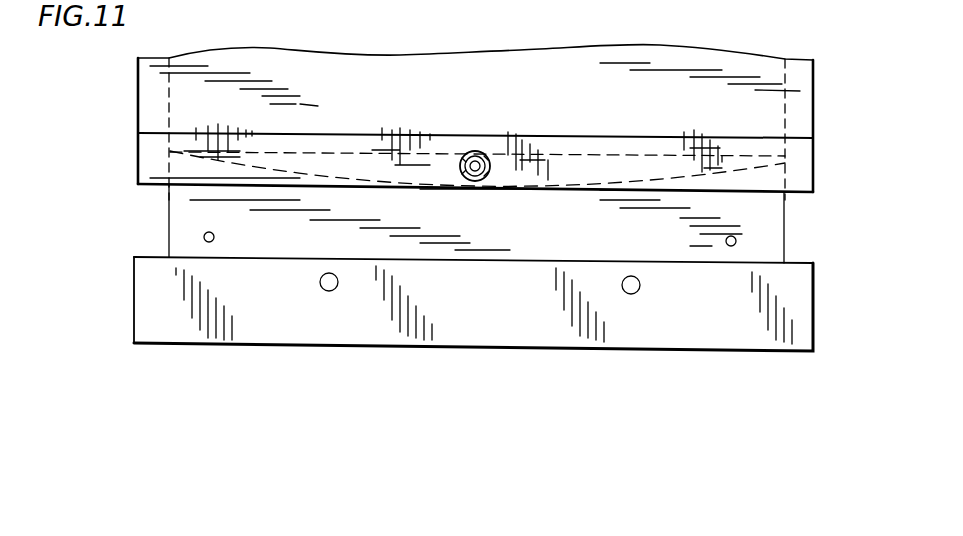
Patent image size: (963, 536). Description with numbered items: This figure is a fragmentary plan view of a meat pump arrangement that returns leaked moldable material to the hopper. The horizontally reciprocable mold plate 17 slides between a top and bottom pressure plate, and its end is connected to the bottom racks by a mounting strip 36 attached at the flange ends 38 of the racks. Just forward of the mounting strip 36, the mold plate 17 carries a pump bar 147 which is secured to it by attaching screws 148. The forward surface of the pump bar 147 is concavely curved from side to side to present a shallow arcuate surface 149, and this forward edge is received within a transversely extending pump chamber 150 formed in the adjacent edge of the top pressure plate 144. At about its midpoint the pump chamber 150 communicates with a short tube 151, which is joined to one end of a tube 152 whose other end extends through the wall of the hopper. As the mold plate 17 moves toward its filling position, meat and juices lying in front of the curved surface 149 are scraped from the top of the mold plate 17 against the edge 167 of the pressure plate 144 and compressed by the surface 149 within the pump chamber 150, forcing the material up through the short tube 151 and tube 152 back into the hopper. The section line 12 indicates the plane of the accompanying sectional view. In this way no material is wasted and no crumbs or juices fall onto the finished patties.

The section line 12 is at (500, 29).
The mold plate 17 is at (782, 112).
The mounting strip 36 is at (537, 338).
The flange ends 38 is at (331, 291).
The top pressure plate 144 is at (802, 166).
The pump bar 147 is at (598, 231).
The attaching screws 148 is at (214, 234).
The arcuate surface 149 is at (587, 178).
The pump chamber 150 is at (618, 166).
The short tube 151 is at (492, 156).
The tube 152 is at (463, 155).
The edge of pressure plate 167 is at (353, 148).